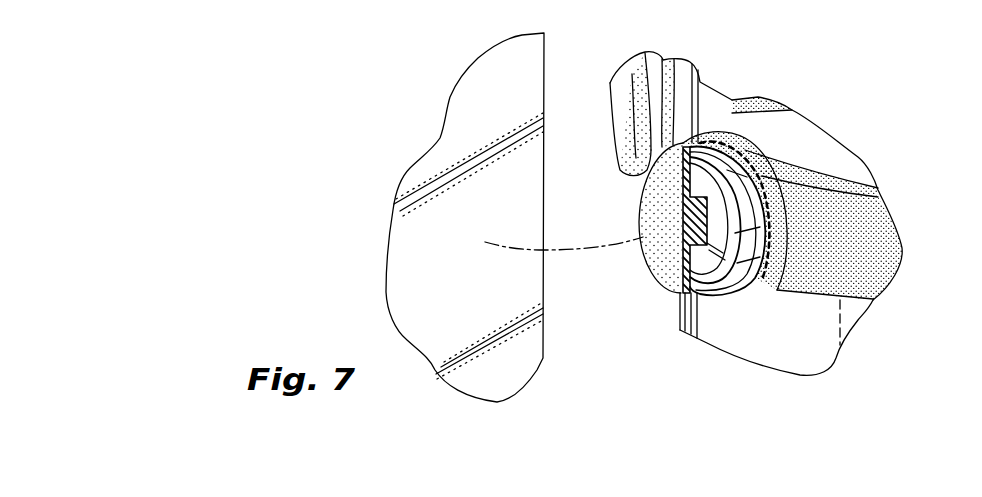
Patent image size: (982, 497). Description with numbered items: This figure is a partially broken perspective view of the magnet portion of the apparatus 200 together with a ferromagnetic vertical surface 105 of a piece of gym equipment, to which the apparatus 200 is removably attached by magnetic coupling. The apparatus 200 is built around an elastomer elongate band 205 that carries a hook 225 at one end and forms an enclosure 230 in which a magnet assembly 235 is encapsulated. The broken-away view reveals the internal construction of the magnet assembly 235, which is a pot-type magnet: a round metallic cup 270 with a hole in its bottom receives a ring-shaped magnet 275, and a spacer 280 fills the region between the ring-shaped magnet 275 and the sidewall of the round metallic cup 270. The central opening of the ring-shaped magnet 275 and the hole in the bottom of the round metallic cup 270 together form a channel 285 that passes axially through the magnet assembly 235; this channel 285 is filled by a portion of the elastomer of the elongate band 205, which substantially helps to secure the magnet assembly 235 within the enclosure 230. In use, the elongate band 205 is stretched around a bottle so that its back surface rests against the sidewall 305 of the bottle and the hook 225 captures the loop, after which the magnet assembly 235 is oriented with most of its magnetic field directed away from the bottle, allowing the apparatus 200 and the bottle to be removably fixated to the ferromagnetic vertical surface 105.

The vertical surface 105 is at (465, 217).
The apparatus 200 is at (791, 236).
The elongate band 205 is at (860, 306).
The hook 225 is at (617, 84).
The enclosure 230 is at (659, 249).
The magnet assembly 235 is at (745, 178).
The round metallic cup 270 is at (753, 293).
The ring-shaped magnet 275 is at (707, 300).
The spacer 280 is at (713, 300).
The channel 285 is at (683, 222).
The sidewall 305 is at (815, 362).